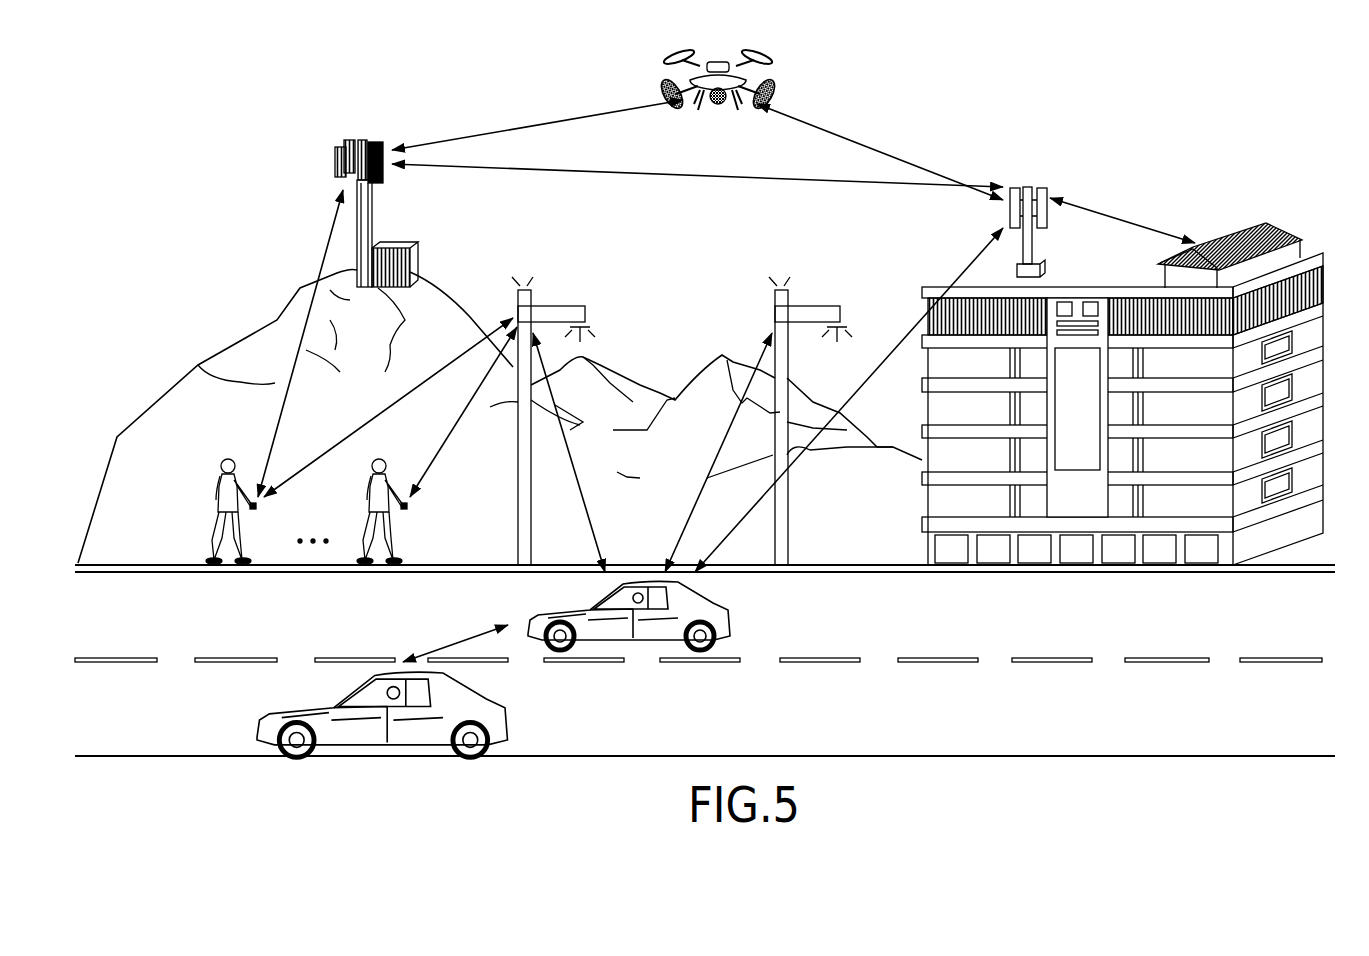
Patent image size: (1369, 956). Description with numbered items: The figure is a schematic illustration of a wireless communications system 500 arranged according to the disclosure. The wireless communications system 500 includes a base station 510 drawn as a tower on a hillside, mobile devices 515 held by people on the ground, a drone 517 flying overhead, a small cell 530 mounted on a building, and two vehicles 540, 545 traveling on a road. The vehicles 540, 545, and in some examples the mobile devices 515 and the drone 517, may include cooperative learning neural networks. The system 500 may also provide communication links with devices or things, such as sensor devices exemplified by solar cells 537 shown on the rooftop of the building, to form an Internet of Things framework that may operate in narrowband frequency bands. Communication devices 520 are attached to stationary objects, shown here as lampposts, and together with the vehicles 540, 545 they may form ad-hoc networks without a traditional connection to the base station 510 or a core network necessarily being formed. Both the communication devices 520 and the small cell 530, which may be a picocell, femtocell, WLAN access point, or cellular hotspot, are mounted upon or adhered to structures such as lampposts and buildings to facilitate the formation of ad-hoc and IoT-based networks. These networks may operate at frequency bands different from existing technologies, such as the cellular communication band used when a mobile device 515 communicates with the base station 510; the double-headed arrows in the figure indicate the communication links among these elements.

The wireless communications system 500 is at (280, 95).
The base station 510 is at (383, 145).
The mobile devices 515 is at (256, 507).
The drone 517 is at (760, 88).
The communication devices 520 is at (535, 297).
The small cell 530 is at (1048, 188).
The solar cells 537 is at (1265, 232).
The vehicle 540 is at (368, 672).
The vehicle 545 is at (600, 578).